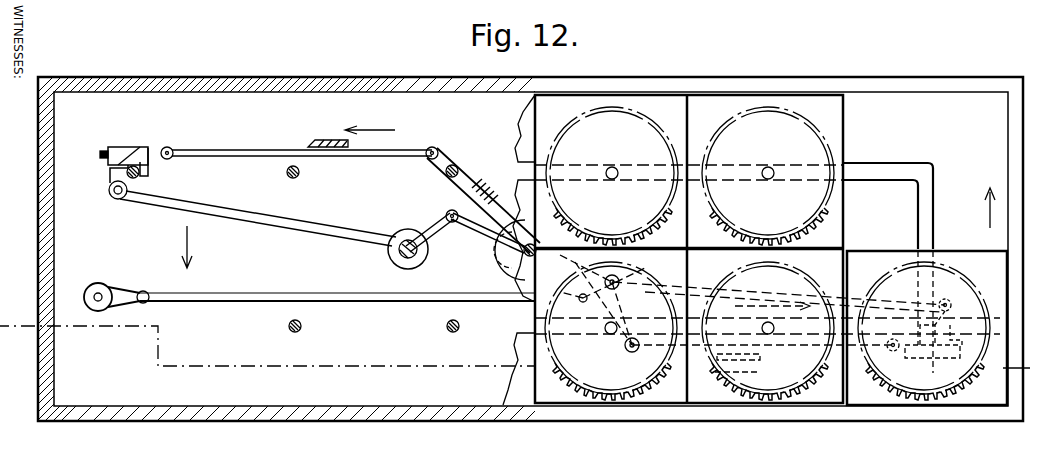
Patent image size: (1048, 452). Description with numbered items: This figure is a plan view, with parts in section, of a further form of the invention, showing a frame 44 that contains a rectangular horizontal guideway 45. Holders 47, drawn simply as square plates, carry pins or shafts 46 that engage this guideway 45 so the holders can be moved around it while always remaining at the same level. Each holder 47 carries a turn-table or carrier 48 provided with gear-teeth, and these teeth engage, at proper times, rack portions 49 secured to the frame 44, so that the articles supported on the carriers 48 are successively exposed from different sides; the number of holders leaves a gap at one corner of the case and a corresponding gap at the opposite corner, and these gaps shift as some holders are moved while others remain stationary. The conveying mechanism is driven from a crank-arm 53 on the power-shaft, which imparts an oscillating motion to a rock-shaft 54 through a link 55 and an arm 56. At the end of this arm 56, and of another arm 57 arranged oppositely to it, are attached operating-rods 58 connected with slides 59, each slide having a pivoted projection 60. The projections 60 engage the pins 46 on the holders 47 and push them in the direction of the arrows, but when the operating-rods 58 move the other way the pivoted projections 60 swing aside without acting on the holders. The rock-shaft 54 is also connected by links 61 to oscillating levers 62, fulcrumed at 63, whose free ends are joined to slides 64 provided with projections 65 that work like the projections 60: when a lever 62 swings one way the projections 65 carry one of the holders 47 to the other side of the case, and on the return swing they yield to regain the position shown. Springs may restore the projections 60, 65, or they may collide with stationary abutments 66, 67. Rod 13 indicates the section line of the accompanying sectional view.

The connecting rod 13 is at (1025, 362).
The frame 44 is at (118, 405).
The rectangular horizontal guideway 45 is at (932, 240).
The pins or shafts 46 is at (133, 178).
The holders 47 is at (840, 130).
The turn-table or carrier 48 is at (689, 176).
The rack portions 49 is at (662, 403).
The crank-arm 53 is at (138, 291).
The rock-shaft 54 is at (520, 258).
The link 55 is at (334, 298).
The arm 56 is at (605, 306).
The arm 57 is at (472, 180).
The operating-rods 58 is at (266, 150).
The slides 59 is at (168, 148).
The pivoted projection 60 is at (148, 170).
The links 61 is at (470, 242).
The oscillating levers 62 is at (383, 226).
The fulcrum 63 is at (408, 270).
The slides 64 is at (110, 188).
The projections 65 is at (128, 150).
The stationary abutment 66 is at (313, 140).
The stationary abutment 67 is at (100, 154).